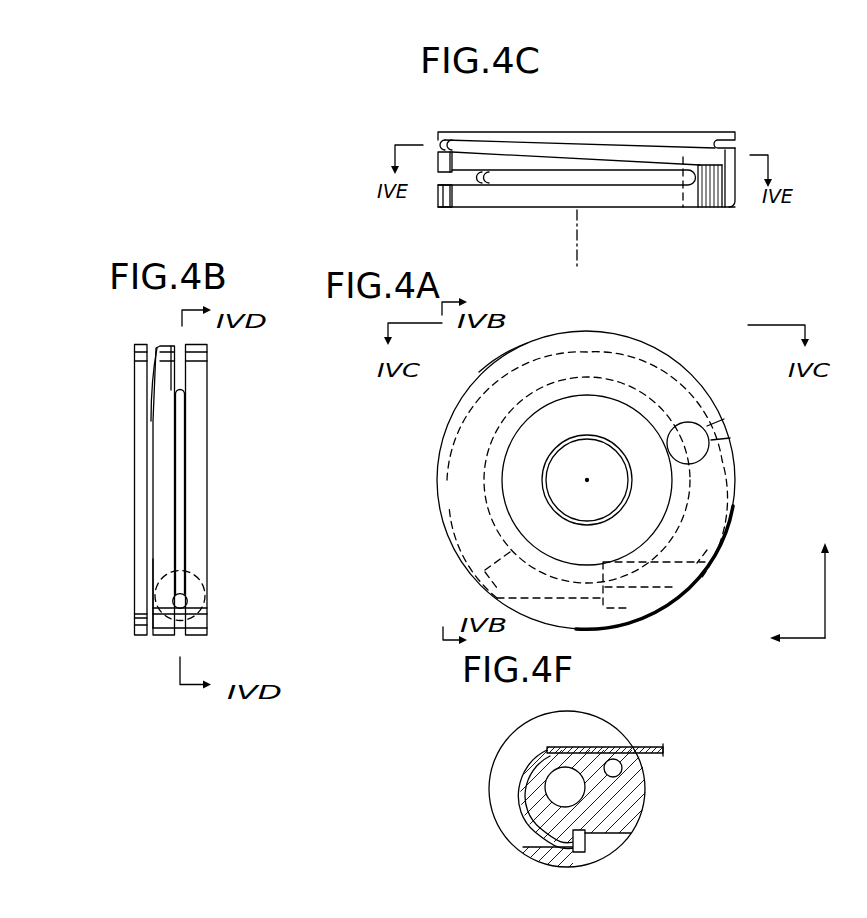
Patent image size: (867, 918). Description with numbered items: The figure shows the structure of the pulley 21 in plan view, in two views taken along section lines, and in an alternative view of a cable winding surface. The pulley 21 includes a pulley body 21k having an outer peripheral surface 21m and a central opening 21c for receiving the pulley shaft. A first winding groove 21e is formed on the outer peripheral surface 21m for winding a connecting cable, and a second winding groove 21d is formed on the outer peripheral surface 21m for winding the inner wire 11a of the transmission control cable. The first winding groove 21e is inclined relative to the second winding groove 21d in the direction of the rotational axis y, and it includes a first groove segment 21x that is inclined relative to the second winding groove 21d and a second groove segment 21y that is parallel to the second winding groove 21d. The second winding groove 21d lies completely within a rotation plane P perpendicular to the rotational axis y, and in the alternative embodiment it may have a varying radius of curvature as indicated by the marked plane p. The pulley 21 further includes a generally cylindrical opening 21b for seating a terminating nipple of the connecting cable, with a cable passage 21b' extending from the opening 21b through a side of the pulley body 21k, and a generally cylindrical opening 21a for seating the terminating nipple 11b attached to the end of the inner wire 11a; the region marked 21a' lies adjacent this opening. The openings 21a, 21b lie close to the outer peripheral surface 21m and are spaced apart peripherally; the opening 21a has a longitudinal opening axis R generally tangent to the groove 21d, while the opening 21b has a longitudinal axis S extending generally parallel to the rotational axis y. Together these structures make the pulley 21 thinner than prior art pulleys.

In FIG. 4A, the pulley 21 is at (752, 467).
In FIG. 4A, the cylindrical opening 21a is at (665, 623).
In FIG. 4B, the cylindrical opening 21a is at (221, 607).
In FIG. 4B, the hole region 21a' is at (149, 638).
In FIG. 4C, the cylindrical opening 21b is at (677, 213).
In FIG. 4A, the cylindrical opening 21b is at (712, 413).
In FIG. 4C, the cable passage 21b' is at (749, 208).
In FIG. 4A, the cable passage 21b' is at (747, 421).
In FIG. 4A, the central opening 21c is at (562, 486).
In FIG. 4C, the second winding groove 21d is at (508, 180).
In FIG. 4A, the second winding groove 21d is at (485, 572).
In FIG. 4B, the second winding groove 21d is at (180, 546).
In FIG. 4F, the second winding groove 21d is at (500, 800).
In FIG. 4C, the first winding groove 21e is at (497, 147).
In FIG. 4A, the first winding groove 21e is at (630, 370).
In FIG. 4B, the first winding groove 21e is at (149, 499).
In FIG. 4A, the pulley body 21k is at (690, 510).
In FIG. 4C, the outer peripheral surface 21m is at (438, 200).
In FIG. 4A, the outer peripheral surface 21m is at (527, 343).
In FIG. 4C, the first groove segment 21x is at (673, 158).
In FIG. 4B, the first groove segment 21x is at (153, 375).
In FIG. 4B, the second groove segment 21y is at (145, 577).
In FIG. 4F, the inner wire 11a is at (650, 747).
In FIG. 4F, the terminating nipple 11b is at (587, 840).
In FIG. 4C, the rotation plane P is at (438, 177).
In FIG. 4C, the longitudinal axis S is at (707, 207).
In FIG. 4A, the longitudinal opening axis R is at (683, 587).
In FIG. 4C, the rotational axis y is at (579, 254).
In FIG. 4A, the rotational axis y is at (600, 493).
In FIG. 4A, the rotation plane p is at (808, 599).